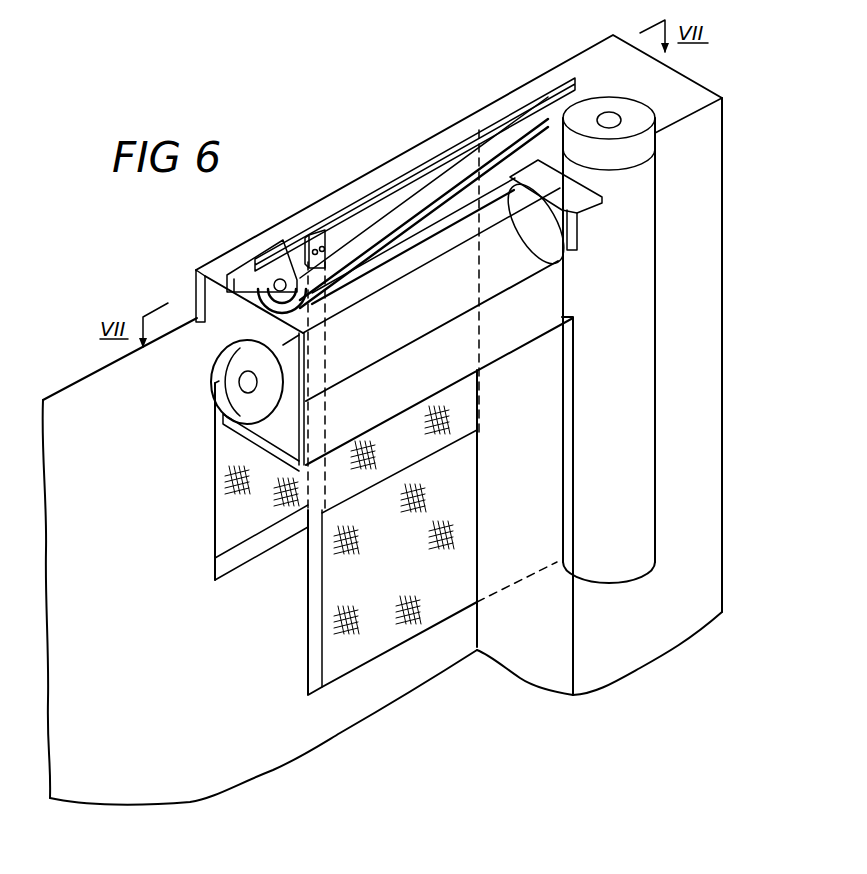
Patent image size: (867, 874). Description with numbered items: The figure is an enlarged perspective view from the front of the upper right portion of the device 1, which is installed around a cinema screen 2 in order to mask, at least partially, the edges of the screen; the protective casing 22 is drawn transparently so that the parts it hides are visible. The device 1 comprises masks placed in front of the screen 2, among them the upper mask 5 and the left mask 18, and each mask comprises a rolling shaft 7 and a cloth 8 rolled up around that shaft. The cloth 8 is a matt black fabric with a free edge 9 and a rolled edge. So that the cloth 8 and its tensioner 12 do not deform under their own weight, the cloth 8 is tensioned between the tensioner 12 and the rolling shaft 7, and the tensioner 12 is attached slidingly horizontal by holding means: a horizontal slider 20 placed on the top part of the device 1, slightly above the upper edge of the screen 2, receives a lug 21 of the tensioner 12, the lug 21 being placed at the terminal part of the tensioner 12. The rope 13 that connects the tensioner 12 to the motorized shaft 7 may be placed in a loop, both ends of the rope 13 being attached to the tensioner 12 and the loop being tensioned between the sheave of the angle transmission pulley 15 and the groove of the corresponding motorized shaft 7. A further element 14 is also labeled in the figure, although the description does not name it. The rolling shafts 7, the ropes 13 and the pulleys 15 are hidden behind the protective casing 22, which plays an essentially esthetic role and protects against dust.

The device 1 is at (178, 270).
The cinema screen 2 is at (142, 618).
The upper mask 5 is at (266, 492).
The rolling shaft 7 is at (627, 133).
The cloth 8 is at (215, 453).
The free edge 9 is at (306, 631).
The tensioner 12 is at (257, 552).
The rope 13 is at (408, 197).
The winding shaft 14 is at (338, 240).
The angle transmission pulley 15 is at (238, 277).
The left mask 18 is at (412, 585).
The horizontal slider 20 is at (473, 137).
The lug 21 is at (318, 235).
The protective casing 22 is at (697, 587).